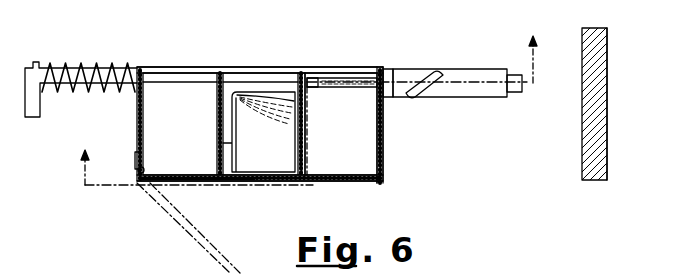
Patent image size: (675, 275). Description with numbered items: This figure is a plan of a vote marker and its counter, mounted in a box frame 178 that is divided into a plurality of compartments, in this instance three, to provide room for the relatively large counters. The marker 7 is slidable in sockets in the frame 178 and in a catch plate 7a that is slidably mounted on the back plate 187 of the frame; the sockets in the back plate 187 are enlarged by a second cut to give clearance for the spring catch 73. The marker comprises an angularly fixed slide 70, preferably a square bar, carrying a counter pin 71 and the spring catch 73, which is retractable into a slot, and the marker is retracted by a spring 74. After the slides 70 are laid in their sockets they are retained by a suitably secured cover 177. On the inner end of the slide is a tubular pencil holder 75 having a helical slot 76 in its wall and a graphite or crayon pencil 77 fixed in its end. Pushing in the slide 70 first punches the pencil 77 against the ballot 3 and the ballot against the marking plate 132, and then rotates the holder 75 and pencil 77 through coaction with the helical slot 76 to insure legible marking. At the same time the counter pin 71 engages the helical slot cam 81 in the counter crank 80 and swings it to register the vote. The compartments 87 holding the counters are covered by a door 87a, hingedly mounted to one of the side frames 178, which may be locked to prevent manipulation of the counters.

The ballot 3 is at (582, 108).
The vote-marker 7 is at (130, 96).
The catch plate 7a is at (388, 68).
The slide 70 is at (46, 80).
The counter pin 71 is at (307, 180).
The spring catch 73 is at (366, 88).
The spring 74 is at (88, 63).
The tubular pencil holder 75 is at (480, 58).
The helical slot 76 is at (430, 80).
The pencil 77 is at (514, 75).
The crank 80 is at (232, 118).
The helical slot cam 81 is at (268, 92).
The housing 87 is at (226, 177).
The door 87a is at (362, 182).
The marking plate 132 is at (605, 116).
The cover 177 is at (204, 67).
The box frame 178 is at (308, 178).
The back plate 187 is at (384, 166).